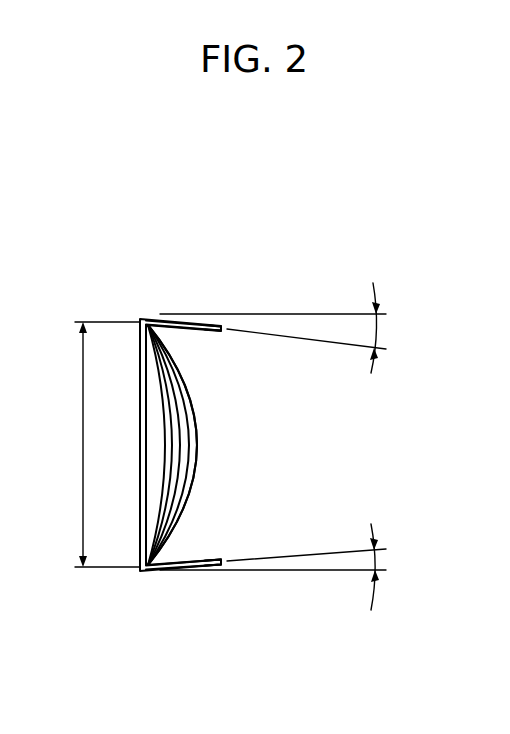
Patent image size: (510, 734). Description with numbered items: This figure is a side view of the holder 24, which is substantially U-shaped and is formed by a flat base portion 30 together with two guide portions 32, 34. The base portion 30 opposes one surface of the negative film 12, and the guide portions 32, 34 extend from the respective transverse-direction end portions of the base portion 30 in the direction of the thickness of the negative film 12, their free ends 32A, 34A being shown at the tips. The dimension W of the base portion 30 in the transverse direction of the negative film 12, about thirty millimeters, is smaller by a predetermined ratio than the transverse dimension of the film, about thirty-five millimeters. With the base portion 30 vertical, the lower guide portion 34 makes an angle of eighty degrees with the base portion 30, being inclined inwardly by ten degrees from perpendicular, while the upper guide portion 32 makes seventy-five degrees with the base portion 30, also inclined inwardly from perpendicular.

The negative film 12 is at (260, 472).
The holder 24 is at (139, 393).
The base portion 30 is at (147, 472).
The guide portion 32 is at (198, 321).
The upper flange tip 32A is at (194, 317).
The guide portion 34 is at (207, 569).
The lower flange tip 34A is at (190, 573).
The dimension of the base portion W is at (83, 461).